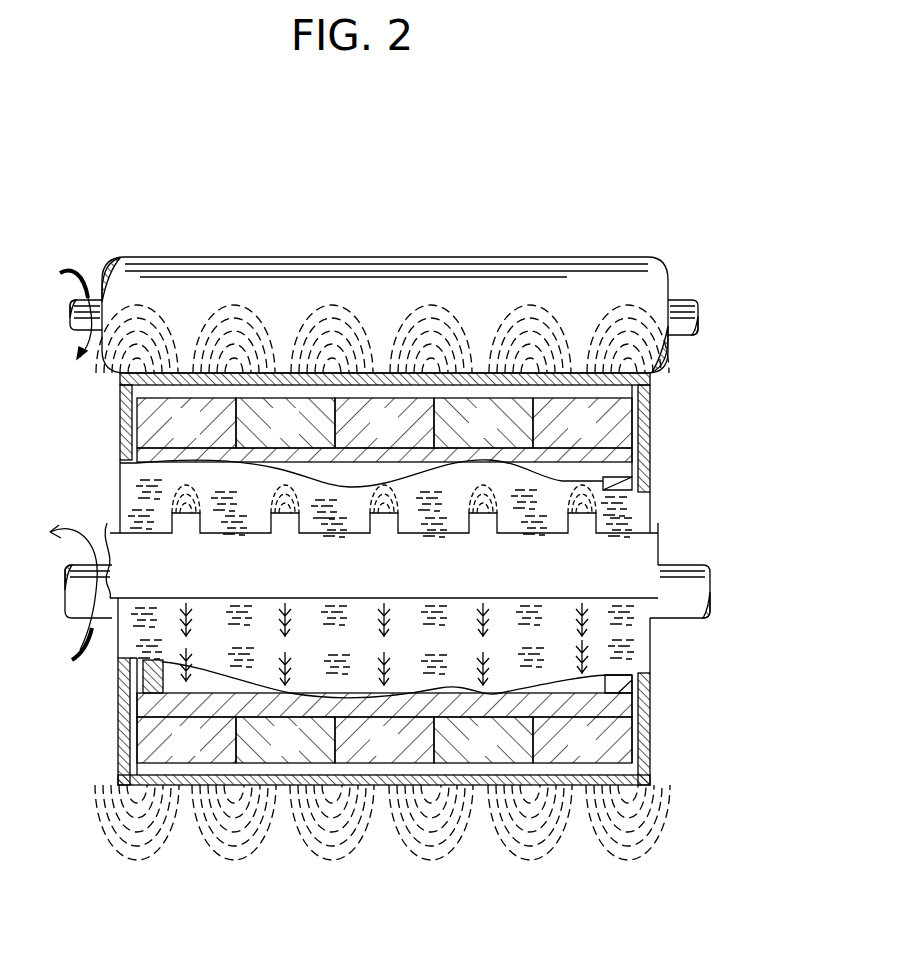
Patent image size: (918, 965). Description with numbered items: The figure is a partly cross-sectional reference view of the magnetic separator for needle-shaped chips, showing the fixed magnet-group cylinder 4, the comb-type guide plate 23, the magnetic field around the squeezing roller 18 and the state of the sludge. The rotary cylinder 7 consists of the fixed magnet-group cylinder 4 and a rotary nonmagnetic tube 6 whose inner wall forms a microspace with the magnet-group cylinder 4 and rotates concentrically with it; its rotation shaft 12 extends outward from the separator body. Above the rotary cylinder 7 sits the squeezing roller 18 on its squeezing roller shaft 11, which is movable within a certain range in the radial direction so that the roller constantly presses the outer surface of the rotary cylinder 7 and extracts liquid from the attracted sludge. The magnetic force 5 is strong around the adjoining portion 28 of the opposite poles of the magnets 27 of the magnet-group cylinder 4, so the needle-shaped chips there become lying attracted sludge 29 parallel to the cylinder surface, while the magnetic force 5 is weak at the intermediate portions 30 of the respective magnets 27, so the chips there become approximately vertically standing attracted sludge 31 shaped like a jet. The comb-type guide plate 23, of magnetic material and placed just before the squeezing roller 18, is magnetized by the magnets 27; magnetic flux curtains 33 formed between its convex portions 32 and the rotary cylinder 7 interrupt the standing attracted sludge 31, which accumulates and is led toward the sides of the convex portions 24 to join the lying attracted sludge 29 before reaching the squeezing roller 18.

The fixed magnet-group cylinder 4 is at (130, 697).
The magnetic force 5 is at (143, 317).
The rotary nonmagnetic tube 6 is at (183, 788).
The rotary cylinder 7 is at (650, 715).
The squeezing roller shaft 11 is at (682, 320).
The rotation shaft 12 is at (675, 602).
The squeezing roller 18 is at (183, 290).
The comb-type guide plate 23 is at (365, 567).
The convex portions of the comb-type guide plate 24 is at (432, 523).
The magnets 27 is at (294, 752).
The adjoining portion of the opposite poles 28 is at (237, 396).
The lying attracted sludge 29 is at (443, 675).
The intermediate portions of the magnets 30 is at (283, 394).
The standing attracted sludge 31 is at (498, 677).
The convex portions of the comb-type guide plate 32 is at (510, 467).
The magnetic flux curtains 33 is at (560, 485).